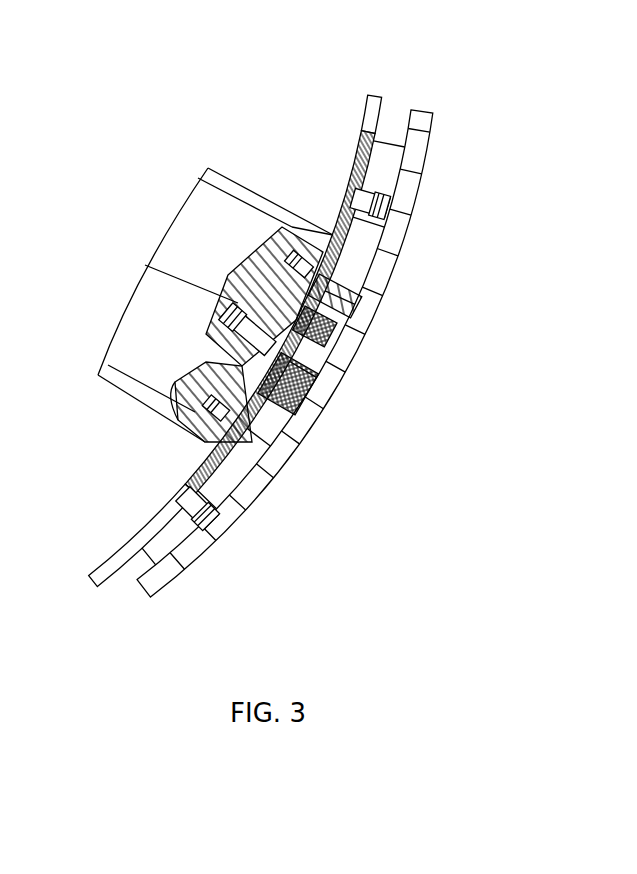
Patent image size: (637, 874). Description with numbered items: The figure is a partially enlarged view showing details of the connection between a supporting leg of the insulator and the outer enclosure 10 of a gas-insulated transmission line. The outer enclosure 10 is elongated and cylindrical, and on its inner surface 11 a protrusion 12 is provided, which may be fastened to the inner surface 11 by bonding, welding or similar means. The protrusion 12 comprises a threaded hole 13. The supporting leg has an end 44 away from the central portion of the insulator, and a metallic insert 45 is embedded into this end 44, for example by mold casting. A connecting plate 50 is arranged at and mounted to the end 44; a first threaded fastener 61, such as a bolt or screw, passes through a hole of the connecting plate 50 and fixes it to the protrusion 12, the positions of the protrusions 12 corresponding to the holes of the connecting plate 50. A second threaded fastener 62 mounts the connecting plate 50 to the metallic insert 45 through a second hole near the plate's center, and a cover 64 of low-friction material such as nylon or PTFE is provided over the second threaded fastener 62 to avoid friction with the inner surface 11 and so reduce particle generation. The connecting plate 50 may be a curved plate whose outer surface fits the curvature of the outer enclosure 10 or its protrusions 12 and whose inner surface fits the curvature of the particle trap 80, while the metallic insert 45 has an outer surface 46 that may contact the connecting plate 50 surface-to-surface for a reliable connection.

The outer enclosure 10 is at (426, 146).
The inner surface 11 is at (412, 120).
The protrusion 12 is at (368, 238).
The hole 13 is at (216, 517).
The end 44 is at (326, 205).
The metallic insert 45 is at (258, 283).
The outer surface 46 is at (252, 392).
The connecting plate 50 is at (228, 486).
The threaded fastener 61 is at (362, 200).
The threaded fastener 62 is at (300, 363).
The cover 64 is at (322, 316).
The particle trap 80 is at (131, 540).